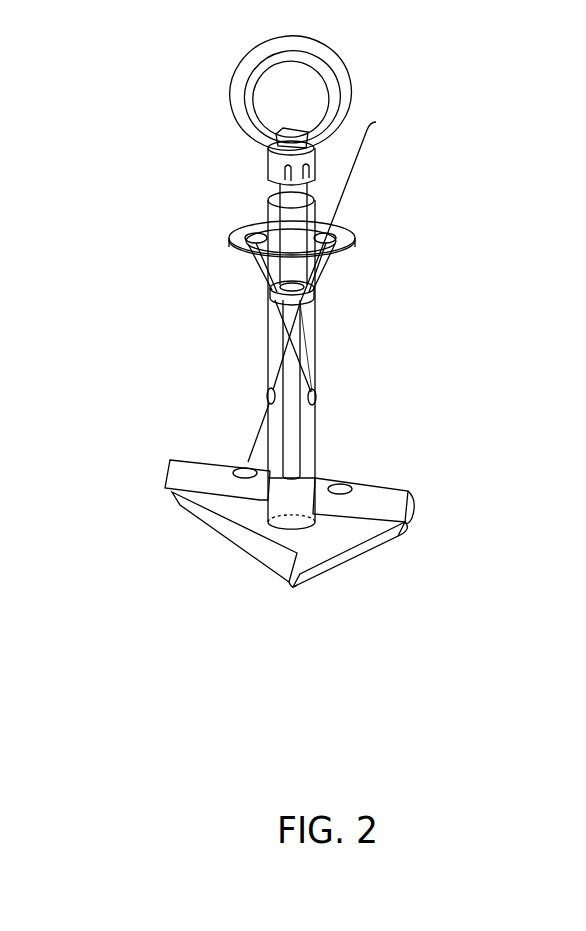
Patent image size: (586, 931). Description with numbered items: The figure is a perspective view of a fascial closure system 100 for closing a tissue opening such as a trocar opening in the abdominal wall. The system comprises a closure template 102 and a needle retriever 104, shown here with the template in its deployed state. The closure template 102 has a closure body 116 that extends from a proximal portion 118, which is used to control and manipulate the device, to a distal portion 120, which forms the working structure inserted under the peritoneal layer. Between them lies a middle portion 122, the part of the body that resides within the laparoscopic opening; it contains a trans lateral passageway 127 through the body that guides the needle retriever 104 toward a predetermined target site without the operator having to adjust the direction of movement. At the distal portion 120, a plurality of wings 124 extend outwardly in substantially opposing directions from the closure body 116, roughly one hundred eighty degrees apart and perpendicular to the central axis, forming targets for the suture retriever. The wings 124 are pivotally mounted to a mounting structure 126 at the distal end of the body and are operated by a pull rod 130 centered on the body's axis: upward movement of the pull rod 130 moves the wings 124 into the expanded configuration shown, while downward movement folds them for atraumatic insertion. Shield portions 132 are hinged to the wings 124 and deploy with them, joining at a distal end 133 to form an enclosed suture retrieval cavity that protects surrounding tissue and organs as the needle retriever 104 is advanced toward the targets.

The fascial closure system 100 is at (183, 117).
The closure template 102 is at (357, 308).
The needle retriever 104 is at (358, 157).
The closure body 116 is at (315, 425).
The proximal portion 118 is at (268, 202).
The distal portion 120 is at (393, 537).
The middle portion 122 is at (268, 340).
The wings 124 is at (185, 470).
The mounting structure 126 is at (285, 512).
The trans lateral passageway 127 is at (316, 388).
The pull rod 130 is at (297, 460).
The shield portions 132 is at (260, 558).
The distal end 133 is at (285, 575).